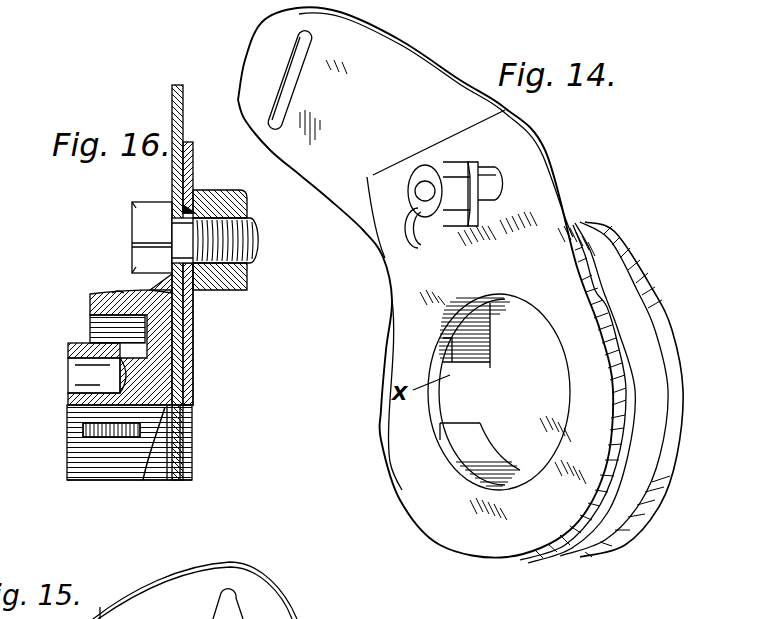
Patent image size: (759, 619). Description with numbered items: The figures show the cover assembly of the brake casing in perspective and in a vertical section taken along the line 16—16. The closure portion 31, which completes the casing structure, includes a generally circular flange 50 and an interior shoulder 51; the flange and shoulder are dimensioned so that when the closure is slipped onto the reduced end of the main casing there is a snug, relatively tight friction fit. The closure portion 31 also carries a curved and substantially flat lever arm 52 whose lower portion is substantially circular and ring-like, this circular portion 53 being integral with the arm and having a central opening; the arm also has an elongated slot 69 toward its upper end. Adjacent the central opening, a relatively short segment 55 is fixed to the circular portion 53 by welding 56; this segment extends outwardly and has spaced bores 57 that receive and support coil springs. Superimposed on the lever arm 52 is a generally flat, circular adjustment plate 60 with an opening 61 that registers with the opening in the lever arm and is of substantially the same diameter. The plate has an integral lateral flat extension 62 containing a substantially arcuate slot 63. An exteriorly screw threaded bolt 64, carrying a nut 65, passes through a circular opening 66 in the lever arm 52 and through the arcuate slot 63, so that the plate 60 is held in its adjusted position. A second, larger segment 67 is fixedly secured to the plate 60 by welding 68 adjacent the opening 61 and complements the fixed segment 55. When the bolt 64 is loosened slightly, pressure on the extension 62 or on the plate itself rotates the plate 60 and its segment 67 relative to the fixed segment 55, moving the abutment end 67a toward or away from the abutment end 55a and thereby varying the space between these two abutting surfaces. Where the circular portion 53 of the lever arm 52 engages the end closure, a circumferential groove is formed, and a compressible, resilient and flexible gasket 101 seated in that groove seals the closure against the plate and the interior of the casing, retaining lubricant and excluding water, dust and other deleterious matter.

In FIG. 14, the closure portion 31 is at (645, 280).
In FIG. 16, the closure portion 31 is at (92, 298).
In FIG. 16, the circular flange 50 is at (116, 291).
In FIG. 16, the interior shoulder 51 is at (164, 330).
In FIG. 14, the lever arm 52 is at (336, 200).
In FIG. 16, the lever arm 52 is at (172, 177).
In FIG. 14, the circular portion 53 is at (472, 313).
In FIG. 16, the circular portion 53 is at (178, 365).
In FIG. 14, the segment 55 is at (490, 340).
In FIG. 16, the segment 55 is at (68, 348).
In FIG. 14, the abutment end 55a is at (473, 367).
In FIG. 14, the welding 56 is at (457, 353).
In FIG. 16, the welding 56 is at (151, 459).
In FIG. 16, the bores 57 is at (82, 365).
In FIG. 14, the adjustment plate 60 is at (407, 473).
In FIG. 16, the adjustment plate 60 is at (189, 473).
In FIG. 14, the opening 61 is at (434, 407).
In FIG. 14, the lateral flat extension 62 is at (378, 173).
In FIG. 16, the lateral flat extension 62 is at (190, 170).
In FIG. 14, the arcuate slot 63 is at (490, 167).
In FIG. 16, the arcuate slot 63 is at (187, 212).
In FIG. 14, the bolt 64 is at (410, 180).
In FIG. 16, the bolt 64 is at (133, 218).
In FIG. 14, the nut 65 is at (422, 163).
In FIG. 16, the nut 65 is at (237, 287).
In FIG. 16, the circular opening 66 is at (197, 190).
In FIG. 14, the segment 67 is at (495, 453).
In FIG. 16, the segment 67 is at (102, 467).
In FIG. 14, the abutment end 67a is at (477, 426).
In FIG. 16, the abutment end 67a is at (82, 428).
In FIG. 14, the welding 68 is at (448, 427).
In FIG. 14, the adjusting slot 69 is at (277, 91).
In FIG. 16, the gasket 101 is at (152, 280).
In FIG. 15, the section line 16 is at (117, 600).